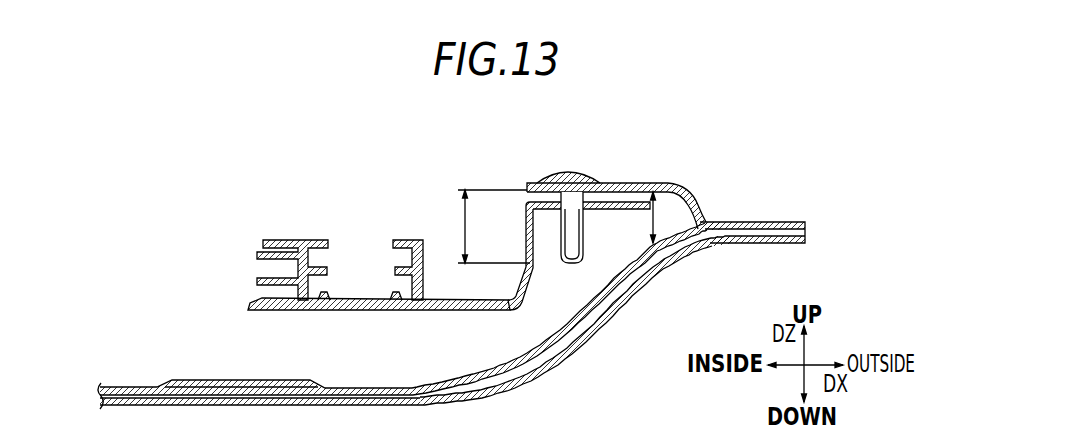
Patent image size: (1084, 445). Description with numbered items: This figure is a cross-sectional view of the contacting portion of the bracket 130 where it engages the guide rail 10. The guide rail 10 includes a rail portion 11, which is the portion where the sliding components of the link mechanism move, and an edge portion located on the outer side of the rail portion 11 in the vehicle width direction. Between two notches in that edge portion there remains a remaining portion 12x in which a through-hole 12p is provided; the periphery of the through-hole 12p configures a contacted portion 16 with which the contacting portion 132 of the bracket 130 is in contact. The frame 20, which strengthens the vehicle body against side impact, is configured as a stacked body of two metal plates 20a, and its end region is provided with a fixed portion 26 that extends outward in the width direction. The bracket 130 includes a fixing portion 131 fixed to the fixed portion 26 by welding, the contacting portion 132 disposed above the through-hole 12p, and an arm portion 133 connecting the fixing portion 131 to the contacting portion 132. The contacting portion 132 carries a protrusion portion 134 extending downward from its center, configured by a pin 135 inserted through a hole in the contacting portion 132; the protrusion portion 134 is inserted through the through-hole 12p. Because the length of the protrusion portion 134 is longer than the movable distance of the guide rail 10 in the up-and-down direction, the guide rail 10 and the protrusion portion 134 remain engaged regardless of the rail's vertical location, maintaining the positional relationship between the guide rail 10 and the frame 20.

The guide rail 10 is at (496, 239).
The rail portion 11 is at (511, 318).
The through-hole 12p is at (584, 250).
The remaining portion 12x is at (586, 205).
The contacted portion 16 is at (530, 203).
The frame 20 is at (451, 315).
The metal plate 20a is at (636, 281).
The fixed portion 26 is at (790, 244).
The bracket 130 is at (637, 210).
The fixing portion 131 is at (789, 221).
The contacting portion 132 is at (530, 186).
The arm portion 133 is at (688, 191).
The protrusion portion 134 is at (559, 239).
The pin 135 is at (563, 174).